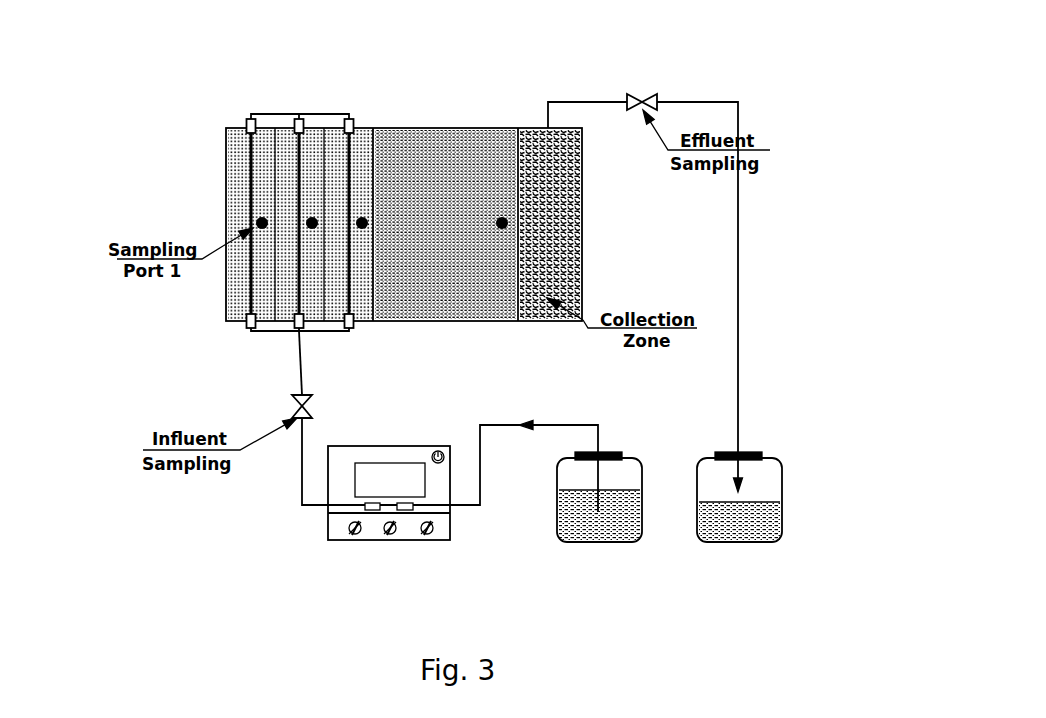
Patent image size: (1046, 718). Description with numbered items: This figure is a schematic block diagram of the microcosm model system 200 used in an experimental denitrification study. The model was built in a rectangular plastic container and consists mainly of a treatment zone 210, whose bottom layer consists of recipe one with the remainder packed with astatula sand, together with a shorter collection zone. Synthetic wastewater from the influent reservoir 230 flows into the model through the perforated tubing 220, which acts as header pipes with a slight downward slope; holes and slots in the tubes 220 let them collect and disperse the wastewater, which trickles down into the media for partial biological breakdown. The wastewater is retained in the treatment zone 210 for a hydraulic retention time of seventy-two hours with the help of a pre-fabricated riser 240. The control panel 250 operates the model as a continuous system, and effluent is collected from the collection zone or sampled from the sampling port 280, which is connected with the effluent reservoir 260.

The microcosm model system 200 is at (93, 55).
The treatment zone 210 is at (423, 310).
The perforated tubing 220 is at (235, 342).
The influent reservoir 230 is at (633, 460).
The pre-fabricated riser 240 is at (504, 143).
The control panel 250 is at (354, 559).
The effluent reservoir 260 is at (778, 481).
The sampling port 280 is at (525, 234).